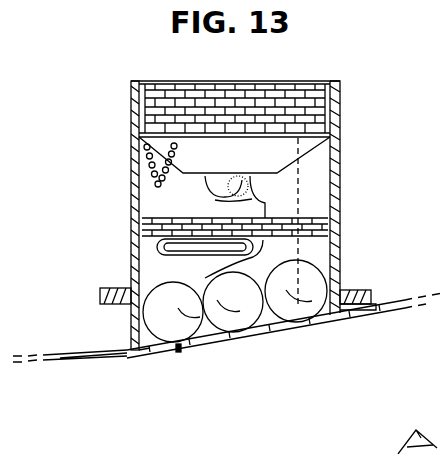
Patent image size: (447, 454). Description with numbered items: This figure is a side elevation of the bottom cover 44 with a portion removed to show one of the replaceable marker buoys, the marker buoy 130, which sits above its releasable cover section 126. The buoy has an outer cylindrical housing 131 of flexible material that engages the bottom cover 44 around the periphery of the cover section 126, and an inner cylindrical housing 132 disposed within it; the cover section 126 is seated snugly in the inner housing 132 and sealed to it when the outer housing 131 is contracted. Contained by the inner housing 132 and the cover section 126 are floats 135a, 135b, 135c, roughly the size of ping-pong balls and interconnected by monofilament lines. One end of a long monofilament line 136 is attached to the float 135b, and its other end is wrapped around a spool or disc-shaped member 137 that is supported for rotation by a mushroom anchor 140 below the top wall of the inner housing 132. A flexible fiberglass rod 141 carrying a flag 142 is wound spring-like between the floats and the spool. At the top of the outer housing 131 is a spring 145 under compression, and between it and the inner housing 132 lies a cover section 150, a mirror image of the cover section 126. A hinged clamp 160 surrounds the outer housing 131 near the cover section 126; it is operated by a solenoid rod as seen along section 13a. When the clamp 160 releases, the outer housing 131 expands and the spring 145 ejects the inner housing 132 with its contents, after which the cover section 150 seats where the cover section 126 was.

The section line 13a is at (106, 368).
The bottom cover 44 is at (97, 350).
The cover section 126 is at (163, 354).
The marker buoy 130 is at (178, 352).
The outer cylindrical housing 131 is at (338, 157).
The inner cylindrical housing 132 is at (336, 190).
The float 135a is at (190, 330).
The float 135b is at (242, 322).
The float 135c is at (306, 318).
The monofilament line 136 is at (215, 202).
The spool or disc-shaped member 137 is at (281, 166).
The mushroom anchor 140 is at (225, 163).
The flexible rod 141 is at (314, 216).
The flag 142 is at (207, 254).
The spring 145 is at (272, 70).
The cover section 150 is at (146, 143).
The clamp 160 is at (102, 292).